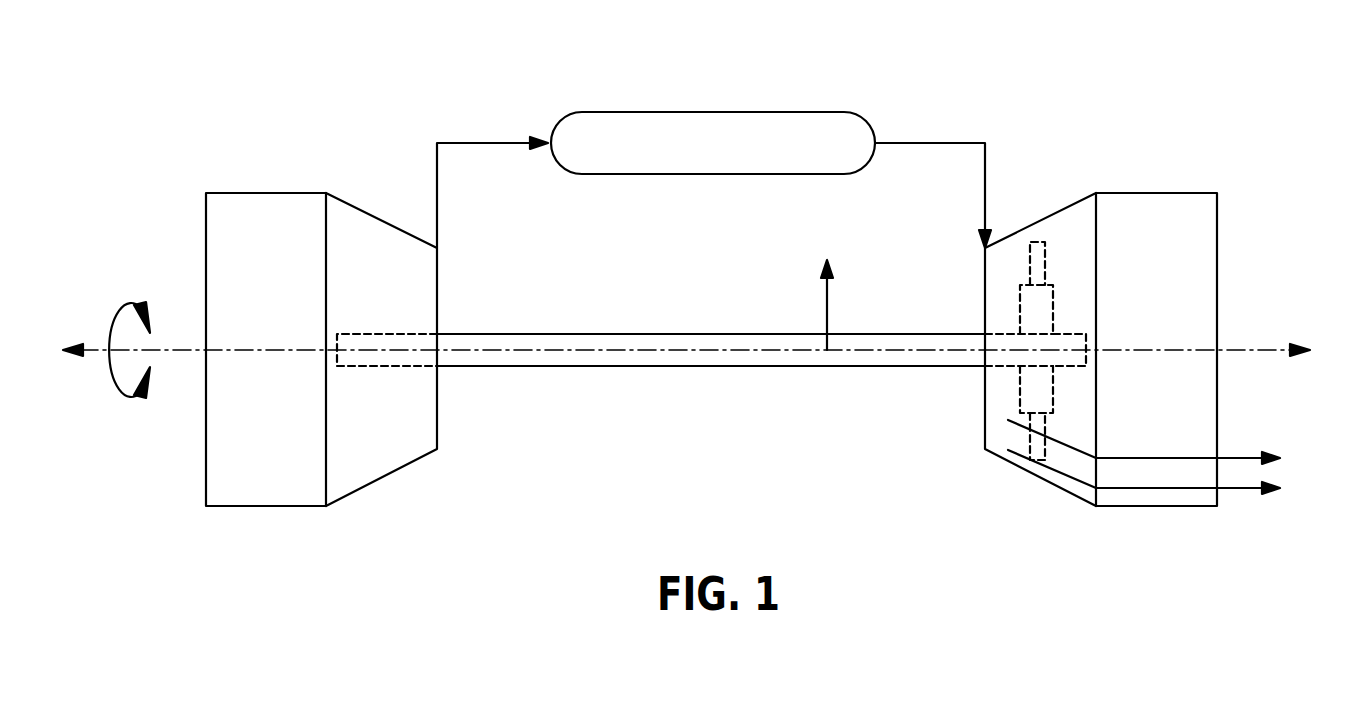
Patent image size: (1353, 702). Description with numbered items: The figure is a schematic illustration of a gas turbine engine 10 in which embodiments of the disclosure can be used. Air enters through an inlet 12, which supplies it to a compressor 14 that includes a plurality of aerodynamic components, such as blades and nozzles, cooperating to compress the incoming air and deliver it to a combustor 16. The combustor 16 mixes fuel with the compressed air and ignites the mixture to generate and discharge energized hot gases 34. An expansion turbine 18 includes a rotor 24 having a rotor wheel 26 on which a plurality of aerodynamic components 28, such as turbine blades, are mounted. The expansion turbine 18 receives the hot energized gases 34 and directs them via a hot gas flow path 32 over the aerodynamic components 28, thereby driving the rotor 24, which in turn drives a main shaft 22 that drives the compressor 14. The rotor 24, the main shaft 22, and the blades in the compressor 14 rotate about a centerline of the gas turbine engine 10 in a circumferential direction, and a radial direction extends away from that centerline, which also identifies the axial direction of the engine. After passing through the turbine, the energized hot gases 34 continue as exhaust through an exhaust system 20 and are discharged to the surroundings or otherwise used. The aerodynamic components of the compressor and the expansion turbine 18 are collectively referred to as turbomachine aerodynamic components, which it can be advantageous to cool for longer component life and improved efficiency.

The gas turbine engine 10 is at (540, 62).
The inlet 12 is at (242, 193).
The compressor 14 is at (383, 218).
The combustor 16 is at (797, 112).
The expansion turbine 18 is at (1075, 203).
The exhaust system 20 is at (1170, 193).
The main shaft 22 is at (698, 366).
The rotor 24 is at (1080, 334).
The rotor wheel 26 is at (1020, 312).
The aerodynamic components 28 is at (1040, 240).
The hot gas flow path 32 is at (1040, 462).
The energized hot gases 34 is at (940, 143).